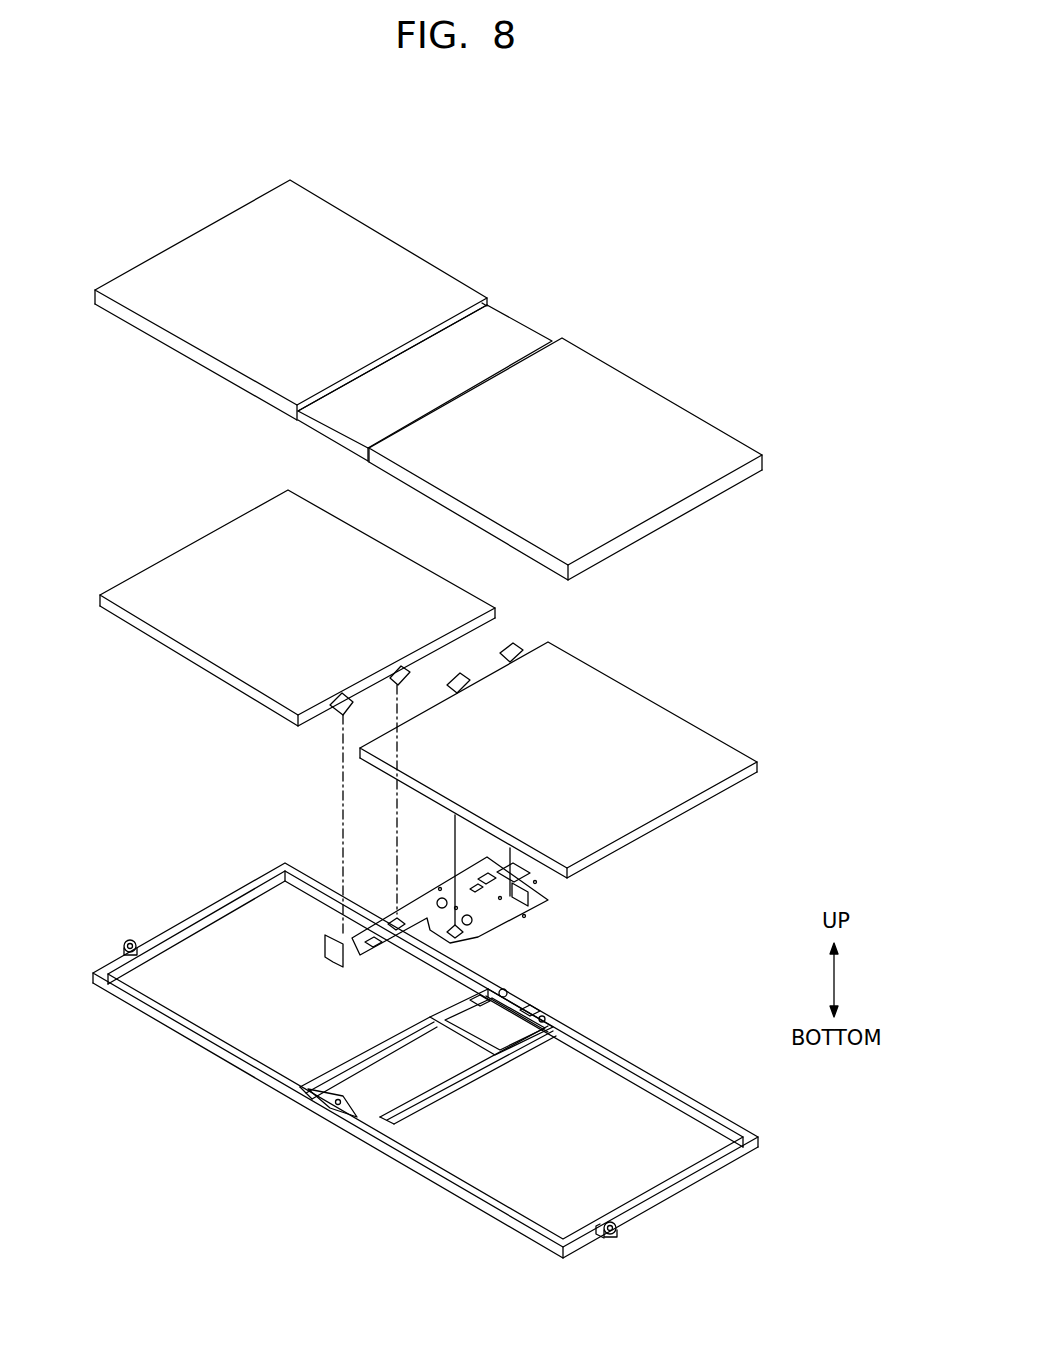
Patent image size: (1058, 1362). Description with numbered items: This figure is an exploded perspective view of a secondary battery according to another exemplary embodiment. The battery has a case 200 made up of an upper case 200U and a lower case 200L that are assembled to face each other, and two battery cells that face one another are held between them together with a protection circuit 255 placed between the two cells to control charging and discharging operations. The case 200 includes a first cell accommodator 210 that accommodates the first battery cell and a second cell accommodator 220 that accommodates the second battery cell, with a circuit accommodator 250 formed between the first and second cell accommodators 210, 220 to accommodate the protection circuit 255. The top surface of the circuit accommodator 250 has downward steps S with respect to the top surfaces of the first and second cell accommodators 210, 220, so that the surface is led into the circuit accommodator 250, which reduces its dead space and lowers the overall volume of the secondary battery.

The case 200 is at (188, 218).
The upper case 200U is at (725, 448).
The lower case 200L is at (690, 1095).
The second cell accommodator 220 is at (373, 238).
The first cell accommodator 210 is at (598, 395).
The circuit accommodator 250 is at (512, 338).
The downward step S is at (468, 302).
The protection circuit 255 is at (515, 939).